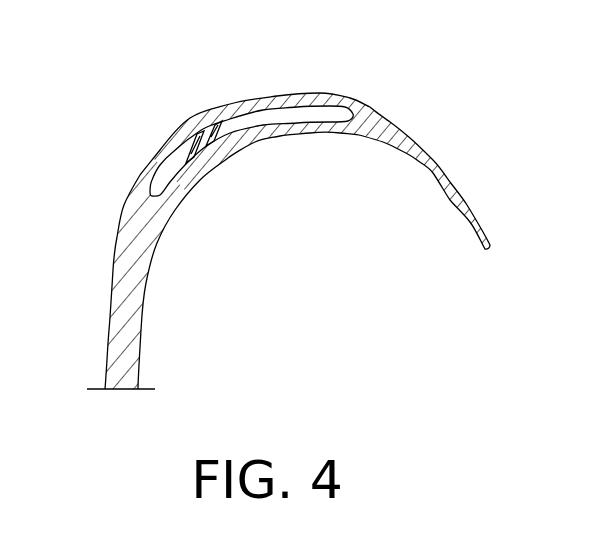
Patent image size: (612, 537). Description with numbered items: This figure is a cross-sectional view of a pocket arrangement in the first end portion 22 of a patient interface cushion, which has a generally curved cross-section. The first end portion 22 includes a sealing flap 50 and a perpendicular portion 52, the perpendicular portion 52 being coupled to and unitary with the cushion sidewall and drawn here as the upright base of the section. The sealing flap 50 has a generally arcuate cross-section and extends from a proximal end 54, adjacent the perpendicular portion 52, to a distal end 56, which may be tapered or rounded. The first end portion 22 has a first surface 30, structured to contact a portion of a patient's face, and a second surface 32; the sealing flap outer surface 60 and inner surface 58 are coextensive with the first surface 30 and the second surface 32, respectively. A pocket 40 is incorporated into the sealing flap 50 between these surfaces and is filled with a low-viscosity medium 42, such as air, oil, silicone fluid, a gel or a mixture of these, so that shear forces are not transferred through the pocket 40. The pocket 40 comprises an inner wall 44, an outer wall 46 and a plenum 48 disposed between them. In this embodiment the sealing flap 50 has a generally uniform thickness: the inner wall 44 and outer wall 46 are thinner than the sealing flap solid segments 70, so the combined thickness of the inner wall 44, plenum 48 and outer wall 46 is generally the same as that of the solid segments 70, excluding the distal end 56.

The first end portion 22 is at (148, 115).
The first surface 30 is at (300, 94).
The second surface 32 is at (146, 284).
The pocket 40 is at (160, 180).
The low-viscosity medium 42 is at (204, 120).
The inner wall 44 is at (281, 137).
The outer wall 46 is at (252, 108).
The plenum 48 is at (328, 116).
The sealing flap 50 is at (372, 104).
The perpendicular portion 52 is at (113, 303).
The proximal end 54 is at (107, 373).
The distal end 56 is at (470, 206).
The inner surface 58 is at (213, 152).
The outer surface 60 is at (325, 108).
The solid segments 70 is at (118, 243).